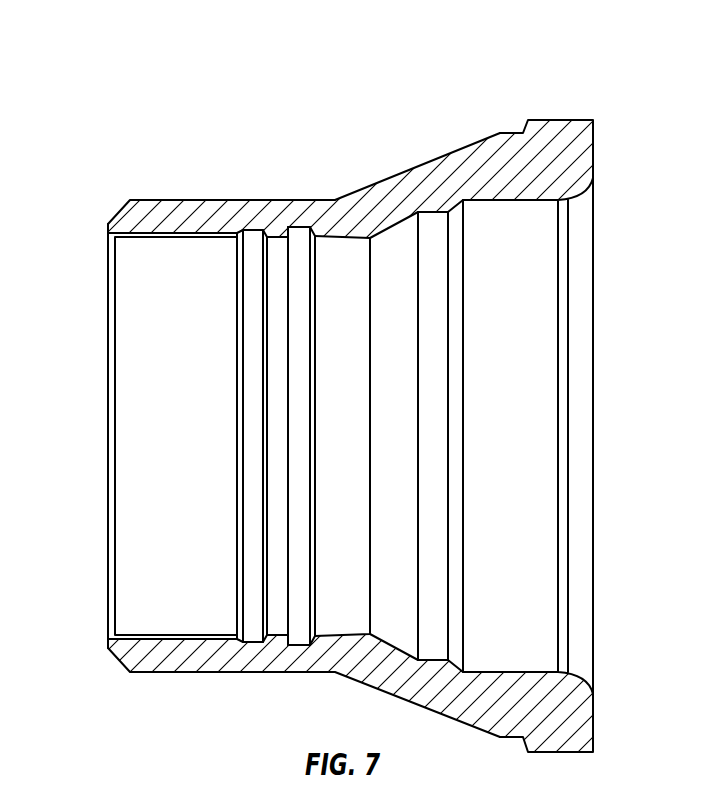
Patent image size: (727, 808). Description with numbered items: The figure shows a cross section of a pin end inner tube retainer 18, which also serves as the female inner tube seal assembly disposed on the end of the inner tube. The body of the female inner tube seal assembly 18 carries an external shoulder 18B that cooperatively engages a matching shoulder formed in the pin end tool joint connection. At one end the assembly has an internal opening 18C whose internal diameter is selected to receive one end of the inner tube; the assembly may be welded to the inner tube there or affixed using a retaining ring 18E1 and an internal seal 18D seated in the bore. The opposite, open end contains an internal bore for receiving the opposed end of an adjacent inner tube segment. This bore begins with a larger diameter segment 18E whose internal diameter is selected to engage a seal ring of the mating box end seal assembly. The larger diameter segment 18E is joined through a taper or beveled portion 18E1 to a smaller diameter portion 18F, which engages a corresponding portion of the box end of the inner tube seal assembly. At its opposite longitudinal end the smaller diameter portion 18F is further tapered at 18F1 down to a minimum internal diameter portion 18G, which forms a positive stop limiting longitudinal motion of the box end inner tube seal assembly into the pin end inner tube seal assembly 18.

The pin end inner tube retainer 18 is at (188, 199).
The shoulder 18B is at (523, 133).
The internal opening 18C is at (175, 633).
The internal seal 18D is at (253, 415).
The larger diameter segment 18E is at (523, 202).
The taper or beveled portion 18E1 is at (315, 305).
The smaller diameter portion 18F is at (431, 212).
The taper 18F1 is at (393, 645).
The minimum internal diameter portion 18G is at (338, 632).